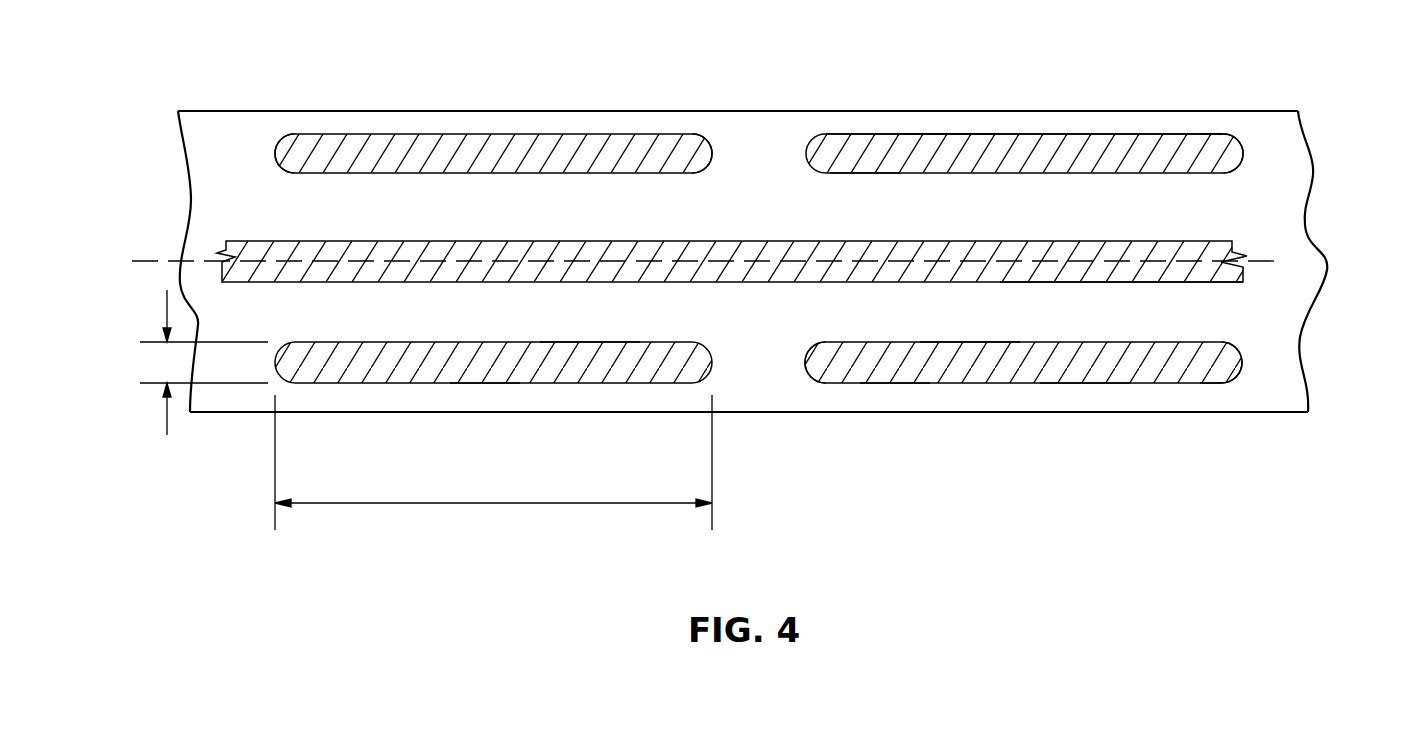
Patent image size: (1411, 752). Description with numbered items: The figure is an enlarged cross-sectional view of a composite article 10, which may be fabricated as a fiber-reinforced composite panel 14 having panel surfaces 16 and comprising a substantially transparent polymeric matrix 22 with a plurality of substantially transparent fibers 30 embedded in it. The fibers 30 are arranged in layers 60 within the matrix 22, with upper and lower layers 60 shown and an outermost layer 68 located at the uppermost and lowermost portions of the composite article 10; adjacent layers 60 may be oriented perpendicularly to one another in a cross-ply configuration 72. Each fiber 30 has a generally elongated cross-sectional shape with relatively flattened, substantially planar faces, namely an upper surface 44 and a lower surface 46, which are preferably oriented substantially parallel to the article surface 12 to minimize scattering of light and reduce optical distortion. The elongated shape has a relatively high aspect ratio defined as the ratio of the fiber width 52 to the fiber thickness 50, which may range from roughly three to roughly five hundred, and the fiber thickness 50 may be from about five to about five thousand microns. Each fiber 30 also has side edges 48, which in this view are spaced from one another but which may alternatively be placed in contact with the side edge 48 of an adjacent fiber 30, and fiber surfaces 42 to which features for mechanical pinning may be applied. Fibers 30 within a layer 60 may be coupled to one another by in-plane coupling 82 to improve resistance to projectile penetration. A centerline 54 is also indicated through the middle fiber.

The composite article 10 is at (1275, 111).
The article surface 12 is at (1195, 111).
The panel 14 is at (1283, 162).
The panel surface 16 is at (1155, 111).
The polymeric matrix 22 is at (1270, 319).
The fiber 30 is at (300, 152).
The fiber surface 42 is at (1068, 133).
The upper surface 44 is at (950, 133).
The lower surface 46 is at (890, 175).
The side edge 48 is at (275, 152).
The fiber thickness 50 is at (167, 435).
The fiber width 52 is at (460, 503).
The centerline 54 is at (157, 262).
The layer 60 is at (1223, 167).
The outermost layer 68 is at (1243, 134).
The cross-ply configuration 72 is at (1243, 272).
The in-plane coupling 82 is at (1075, 377).